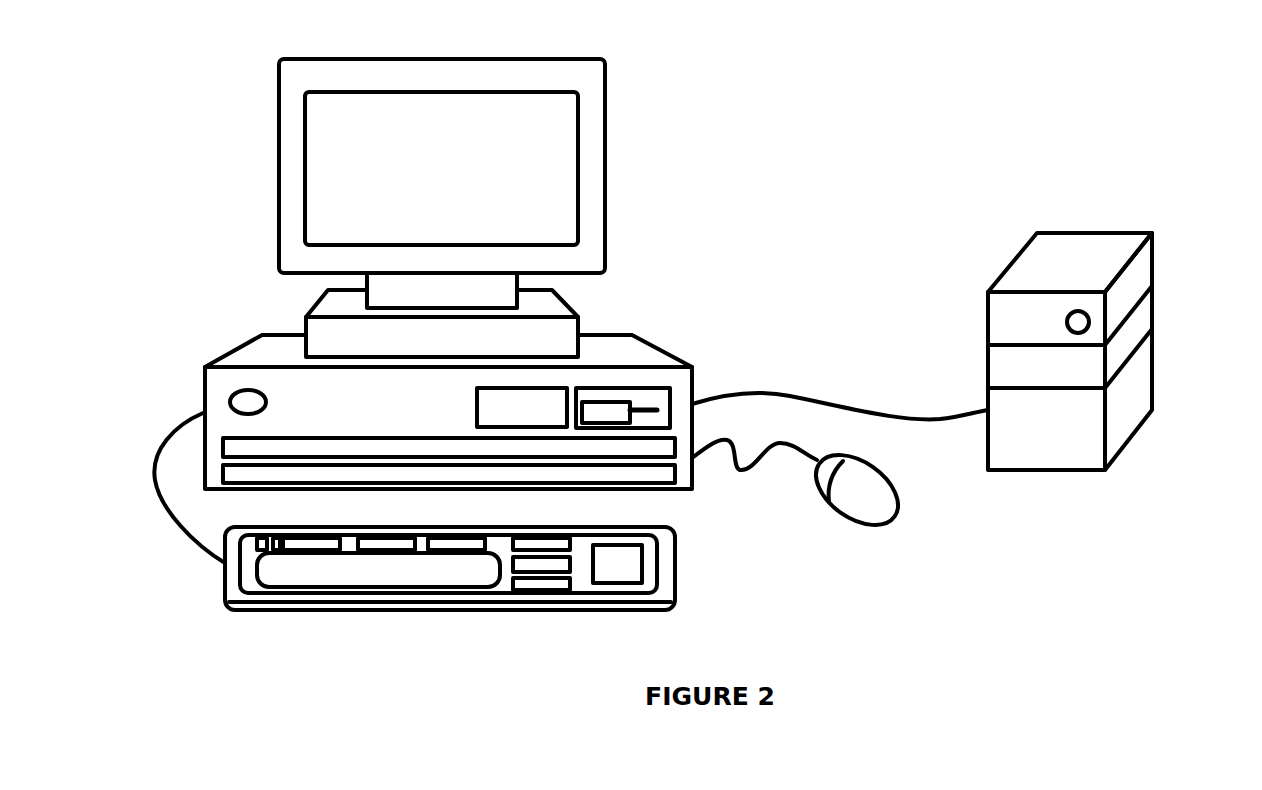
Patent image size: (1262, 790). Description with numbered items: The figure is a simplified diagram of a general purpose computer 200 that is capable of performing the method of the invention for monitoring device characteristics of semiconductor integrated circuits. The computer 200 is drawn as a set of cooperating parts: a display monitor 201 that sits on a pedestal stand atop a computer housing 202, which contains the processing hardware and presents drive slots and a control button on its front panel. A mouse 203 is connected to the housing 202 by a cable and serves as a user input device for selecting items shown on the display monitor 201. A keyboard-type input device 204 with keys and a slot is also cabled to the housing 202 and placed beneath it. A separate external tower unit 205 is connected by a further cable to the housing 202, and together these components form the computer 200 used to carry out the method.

The general purpose computer 200 is at (810, 70).
The display monitor 201 is at (600, 148).
The computer housing 202 is at (640, 347).
The mouse 203 is at (885, 507).
The keyboard / input device 204 is at (667, 582).
The external storage tower 205 is at (1143, 322).